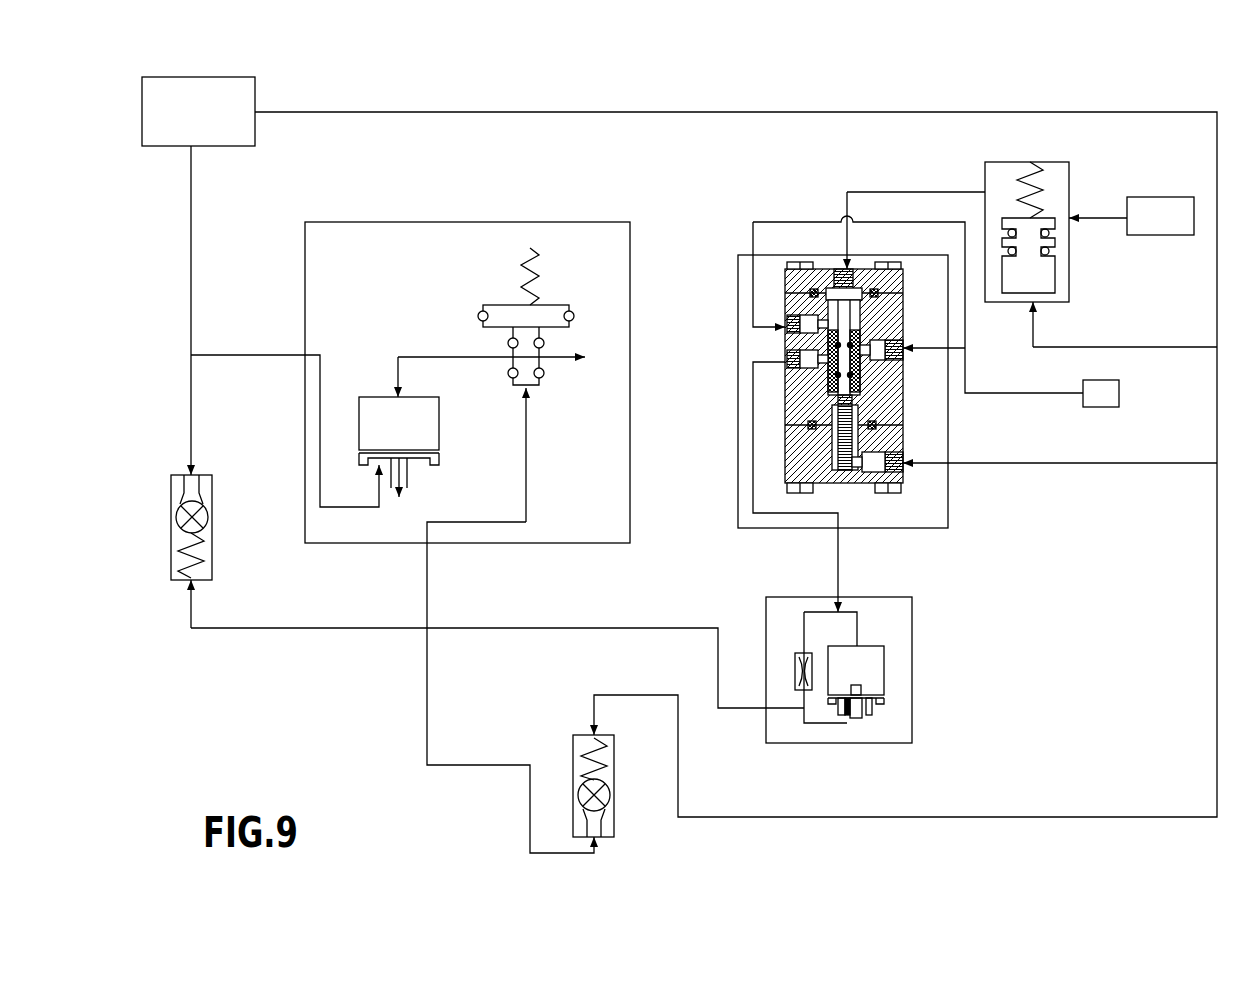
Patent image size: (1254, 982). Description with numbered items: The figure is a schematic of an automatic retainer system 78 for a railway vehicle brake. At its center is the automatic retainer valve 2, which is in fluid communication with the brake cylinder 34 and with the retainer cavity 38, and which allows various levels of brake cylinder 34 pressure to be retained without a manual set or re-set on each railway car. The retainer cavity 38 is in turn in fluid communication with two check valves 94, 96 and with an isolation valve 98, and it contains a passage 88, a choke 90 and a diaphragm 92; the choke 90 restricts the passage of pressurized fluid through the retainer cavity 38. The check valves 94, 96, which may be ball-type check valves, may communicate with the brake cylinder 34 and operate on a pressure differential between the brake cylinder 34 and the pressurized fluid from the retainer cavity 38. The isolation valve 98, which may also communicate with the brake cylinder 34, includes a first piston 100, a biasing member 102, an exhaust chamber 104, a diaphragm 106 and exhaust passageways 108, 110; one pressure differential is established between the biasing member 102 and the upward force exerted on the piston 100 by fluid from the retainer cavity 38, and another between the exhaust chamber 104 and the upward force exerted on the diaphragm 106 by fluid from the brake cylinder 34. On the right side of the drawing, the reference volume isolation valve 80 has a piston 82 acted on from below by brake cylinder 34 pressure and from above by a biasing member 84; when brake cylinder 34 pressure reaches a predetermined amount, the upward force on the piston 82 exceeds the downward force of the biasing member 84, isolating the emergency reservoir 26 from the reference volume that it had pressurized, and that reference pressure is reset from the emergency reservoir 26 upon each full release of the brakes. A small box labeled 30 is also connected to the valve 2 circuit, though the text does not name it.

The automatic retainer system 78 is at (950, 91).
The brake cylinder 34 is at (240, 147).
The isolation valve 98 is at (442, 222).
The biasing member 102 is at (533, 251).
The first piston 100 is at (537, 390).
The exhaust passageway 108 is at (565, 361).
The exhaust chamber 104 is at (437, 413).
The diaphragm 106 is at (437, 459).
The exhaust passageway 110 is at (407, 471).
The check valve 96 is at (212, 515).
The check valve 94 is at (614, 761).
The automatic retainer valve 2 is at (948, 425).
The reference volume isolation valve 80 is at (1010, 303).
The biasing member 84 is at (1040, 210).
The piston 82 is at (1045, 295).
The emergency reservoir 26 is at (1172, 237).
The sensor 30 is at (1119, 398).
The retainer cavity 38 is at (925, 727).
The choke 90 is at (795, 670).
The passage 88 is at (880, 666).
The diaphragm 92 is at (884, 699).